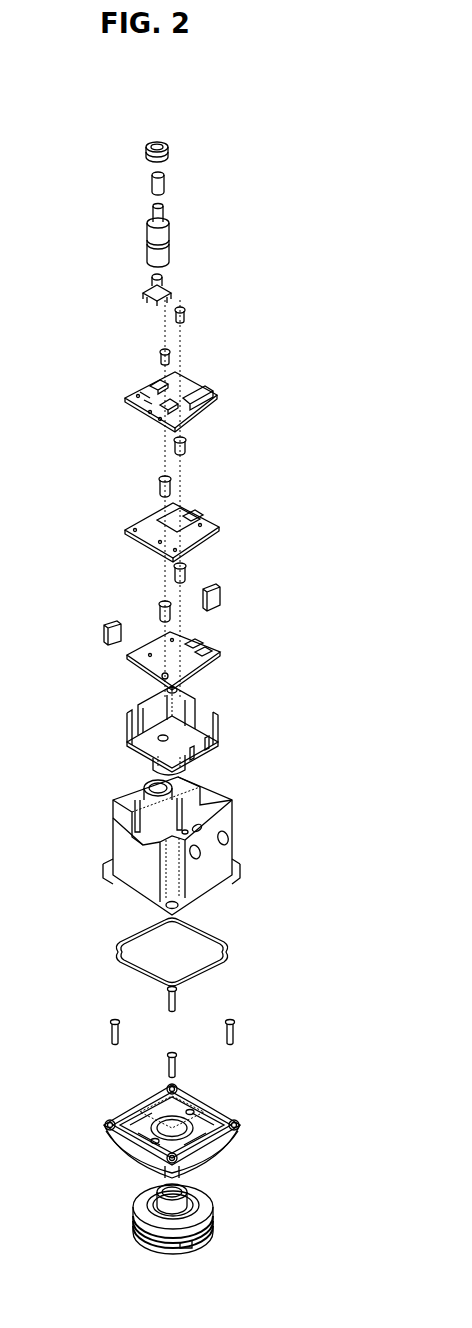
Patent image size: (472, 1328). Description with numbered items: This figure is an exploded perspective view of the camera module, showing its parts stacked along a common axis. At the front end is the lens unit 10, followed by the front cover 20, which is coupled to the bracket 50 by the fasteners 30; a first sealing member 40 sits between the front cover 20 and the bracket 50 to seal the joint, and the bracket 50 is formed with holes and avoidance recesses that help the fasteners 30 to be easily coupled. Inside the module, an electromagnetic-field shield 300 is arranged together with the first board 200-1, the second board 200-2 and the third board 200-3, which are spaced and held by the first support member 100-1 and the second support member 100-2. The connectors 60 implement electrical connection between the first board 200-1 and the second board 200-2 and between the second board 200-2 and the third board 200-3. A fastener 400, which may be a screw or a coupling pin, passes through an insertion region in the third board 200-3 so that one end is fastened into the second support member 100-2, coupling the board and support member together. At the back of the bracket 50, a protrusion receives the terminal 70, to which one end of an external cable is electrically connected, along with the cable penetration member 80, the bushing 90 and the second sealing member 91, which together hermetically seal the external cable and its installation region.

The lens unit 10 is at (214, 1222).
The front cover 20 is at (227, 1150).
The fasteners 30 is at (240, 983).
The first sealing member 40 is at (228, 954).
The bracket 50 is at (225, 862).
The connectors 60 is at (221, 598).
The terminal 70 is at (150, 289).
The cable penetration member 80 is at (146, 242).
The bushing 90 is at (151, 182).
The second sealing member 91 is at (145, 151).
The first support member 100-1 is at (158, 614).
The second support member 100-2 is at (158, 483).
The first board 200-1 is at (221, 655).
The second board 200-2 is at (220, 529).
The third board 200-3 is at (218, 397).
The electromagnetic-field shield 300 is at (220, 740).
The fastener 400 is at (174, 310).